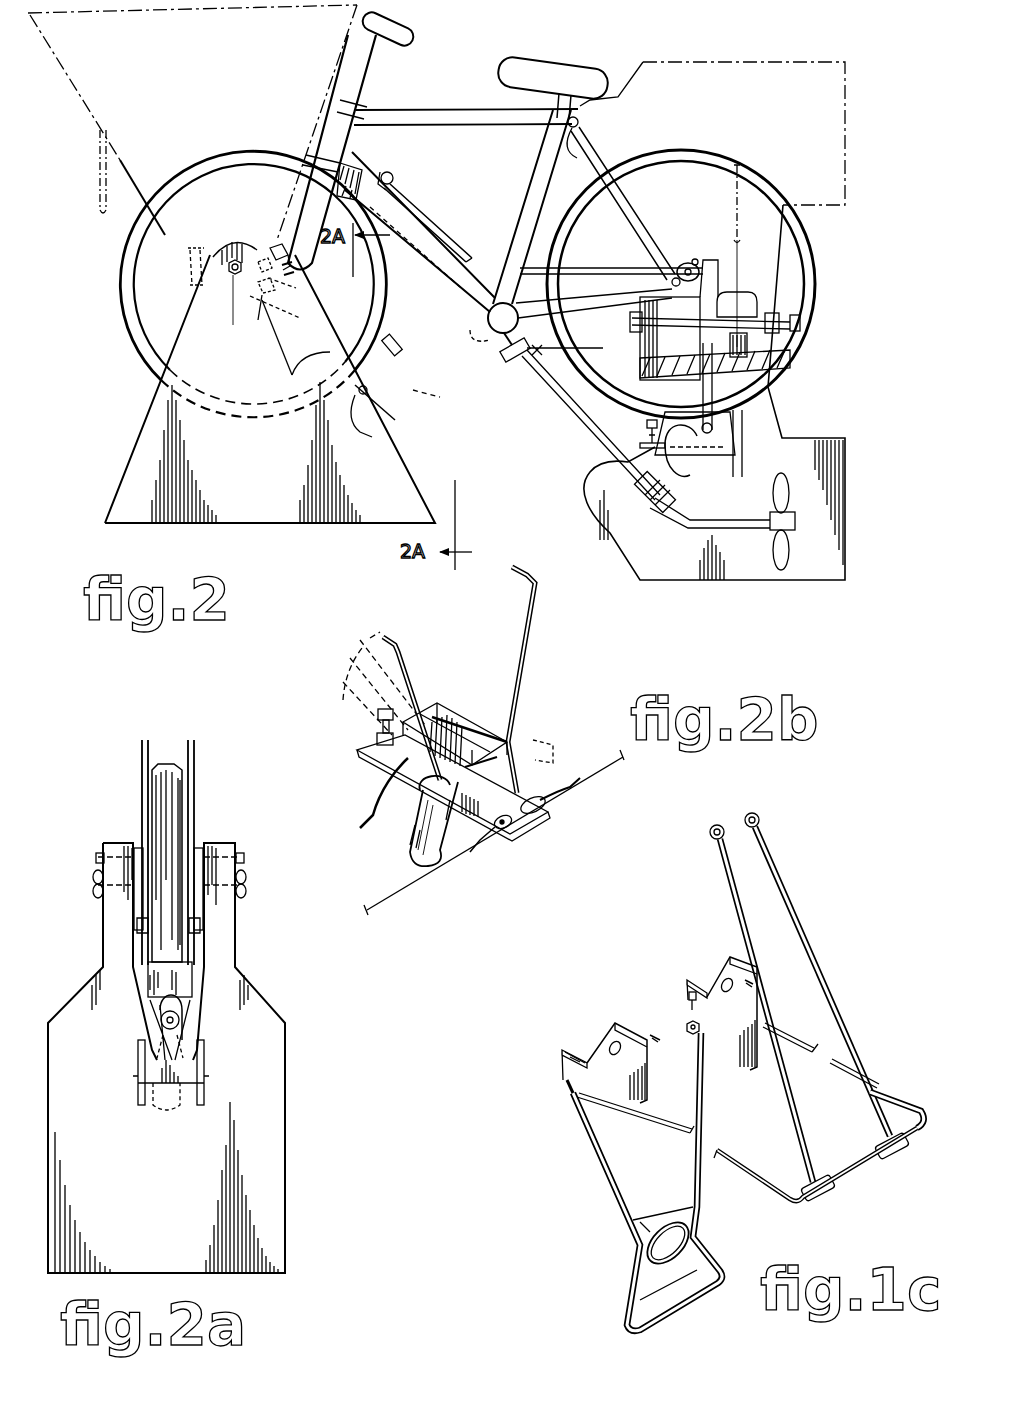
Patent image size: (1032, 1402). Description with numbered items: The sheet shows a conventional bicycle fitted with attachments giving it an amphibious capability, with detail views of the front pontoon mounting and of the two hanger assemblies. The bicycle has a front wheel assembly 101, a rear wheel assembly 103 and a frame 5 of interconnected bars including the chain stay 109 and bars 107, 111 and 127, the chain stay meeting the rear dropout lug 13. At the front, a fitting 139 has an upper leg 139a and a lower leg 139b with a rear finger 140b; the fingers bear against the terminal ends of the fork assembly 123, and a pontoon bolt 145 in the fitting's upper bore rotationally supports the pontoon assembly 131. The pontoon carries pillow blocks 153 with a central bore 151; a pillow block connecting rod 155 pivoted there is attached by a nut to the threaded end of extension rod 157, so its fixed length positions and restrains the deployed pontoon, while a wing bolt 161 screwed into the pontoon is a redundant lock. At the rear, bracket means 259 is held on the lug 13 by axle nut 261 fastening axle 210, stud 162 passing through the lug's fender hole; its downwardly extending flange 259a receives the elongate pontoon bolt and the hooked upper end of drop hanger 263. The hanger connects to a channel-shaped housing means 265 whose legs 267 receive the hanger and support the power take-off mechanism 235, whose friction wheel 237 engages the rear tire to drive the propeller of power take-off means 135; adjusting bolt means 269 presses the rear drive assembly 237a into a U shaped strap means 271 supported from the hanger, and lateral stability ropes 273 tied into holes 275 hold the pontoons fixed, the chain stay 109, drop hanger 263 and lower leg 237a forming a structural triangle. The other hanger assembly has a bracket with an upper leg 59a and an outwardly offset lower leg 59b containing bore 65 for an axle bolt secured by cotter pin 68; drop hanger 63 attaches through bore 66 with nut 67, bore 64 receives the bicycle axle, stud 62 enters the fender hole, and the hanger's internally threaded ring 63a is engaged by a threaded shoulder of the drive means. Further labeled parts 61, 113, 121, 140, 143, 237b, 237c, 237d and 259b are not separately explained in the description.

In FIG. 2, the front wheel assembly 101 is at (180, 118).
In FIG. 2, the rear wheel assembly 103 is at (700, 150).
In FIG. 2, the frame 5 is at (440, 108).
In FIG. 2, the fork assembly 123 is at (328, 128).
In FIG. 2, the top tube 127 is at (408, 122).
In FIG. 2, the seat stay upper portion 111 is at (575, 158).
In FIG. 2, the seat stay 107 is at (620, 200).
In FIG. 2, the chain stay 109 is at (596, 292).
In FIG. 2, the rear dropout lug 13 is at (683, 263).
In FIG. 2, the axle 210 is at (674, 278).
In FIG. 2, the stud 162 is at (696, 262).
In FIG. 2, the rear bracket means 259 is at (705, 266).
In FIG. 2, the rear frame member 113 is at (705, 276).
In FIG. 2, the axle nut 261 is at (705, 290).
In FIG. 2, the flange 259a is at (660, 345).
In FIG. 2, the drop hanger 263 is at (735, 405).
In FIG. 2B, the drop hanger 263 is at (403, 645).
In FIG. 2, the housing means 265 is at (630, 318).
In FIG. 2B, the housing means 265 is at (520, 836).
In FIG. 2, the power take-off means 135 is at (673, 487).
In FIG. 2, the rear drive assembly 237a is at (632, 478).
In FIG. 2, the cable rod 237c is at (585, 405).
In FIG. 2, the cable loop 237d is at (575, 360).
In FIG. 2, the bracket lower portion 259b is at (605, 350).
In FIG. 2, the crank / bottom bracket 121 is at (495, 370).
In FIG. 2, the fitting 139 is at (232, 245).
In FIG. 2, the clamp member 140 is at (278, 245).
In FIG. 2, the clamp block 143 is at (262, 262).
In FIG. 2, the pontoon bolt 145 is at (196, 258).
In FIG. 2A, the pontoon bolt 145 is at (96, 856).
In FIG. 2, the wing bolt 161 is at (293, 266).
In FIG. 2A, the wing bolt 161 is at (93, 893).
In FIG. 2, the lower leg 139b is at (276, 288).
In FIG. 2, the upper leg 139a is at (222, 300).
In FIG. 2, the rear finger 140b is at (262, 297).
In FIG. 2, the extension rod 157 is at (294, 374).
In FIG. 2A, the extension rod 157 is at (180, 1010).
In FIG. 2, the pillow block connecting rod 155 is at (415, 315).
In FIG. 2A, the pillow block connecting rod 155 is at (155, 1038).
In FIG. 2, the cable section 237b is at (400, 345).
In FIG. 2, the central bore 151 is at (368, 392).
In FIG. 2, the pillow blocks 153 is at (373, 437).
In FIG. 2A, the pillow blocks 153 is at (138, 1095).
In FIG. 2, the pontoon assembly 131 is at (262, 477).
In FIG. 2B, the friction wheel means 237 is at (448, 725).
In FIG. 2B, the adjusting bolt means 269 is at (378, 718).
In FIG. 2B, the legs 267 is at (553, 790).
In FIG. 2B, the lateral stability ropes 273 is at (597, 772).
In FIG. 2B, the power take-off mechanism 235 is at (372, 818).
In FIG. 2B, the holes 275 is at (515, 822).
In FIG. 2B, the U shaped strap means 271 is at (418, 858).
In FIG. 1C, the support rod 61 is at (785, 885).
In FIG. 1C, the upper leg 59a is at (732, 957).
In FIG. 1C, the lower leg 59b is at (695, 980).
In FIG. 1C, the cotter pin 68 is at (688, 995).
In FIG. 1C, the stud 62 is at (752, 980).
In FIG. 1C, the bore 64 is at (730, 988).
In FIG. 1C, the bore 65 is at (565, 1058).
In FIG. 1C, the bore 66 is at (572, 1096).
In FIG. 1C, the nut 67 is at (694, 1037).
In FIG. 1C, the drop hanger 63 is at (598, 1160).
In FIG. 1C, the internally threaded ring 63a is at (688, 1243).